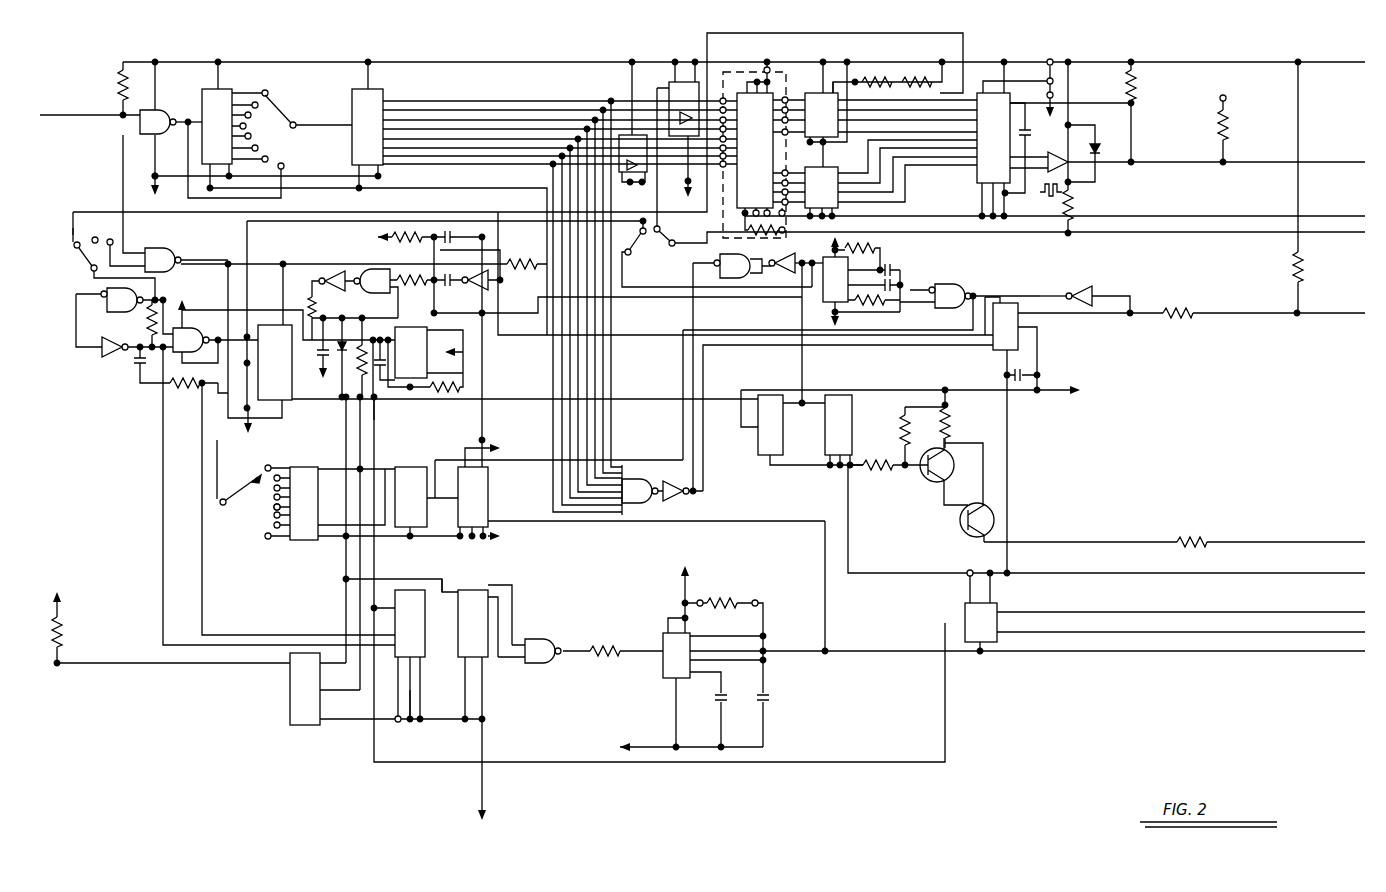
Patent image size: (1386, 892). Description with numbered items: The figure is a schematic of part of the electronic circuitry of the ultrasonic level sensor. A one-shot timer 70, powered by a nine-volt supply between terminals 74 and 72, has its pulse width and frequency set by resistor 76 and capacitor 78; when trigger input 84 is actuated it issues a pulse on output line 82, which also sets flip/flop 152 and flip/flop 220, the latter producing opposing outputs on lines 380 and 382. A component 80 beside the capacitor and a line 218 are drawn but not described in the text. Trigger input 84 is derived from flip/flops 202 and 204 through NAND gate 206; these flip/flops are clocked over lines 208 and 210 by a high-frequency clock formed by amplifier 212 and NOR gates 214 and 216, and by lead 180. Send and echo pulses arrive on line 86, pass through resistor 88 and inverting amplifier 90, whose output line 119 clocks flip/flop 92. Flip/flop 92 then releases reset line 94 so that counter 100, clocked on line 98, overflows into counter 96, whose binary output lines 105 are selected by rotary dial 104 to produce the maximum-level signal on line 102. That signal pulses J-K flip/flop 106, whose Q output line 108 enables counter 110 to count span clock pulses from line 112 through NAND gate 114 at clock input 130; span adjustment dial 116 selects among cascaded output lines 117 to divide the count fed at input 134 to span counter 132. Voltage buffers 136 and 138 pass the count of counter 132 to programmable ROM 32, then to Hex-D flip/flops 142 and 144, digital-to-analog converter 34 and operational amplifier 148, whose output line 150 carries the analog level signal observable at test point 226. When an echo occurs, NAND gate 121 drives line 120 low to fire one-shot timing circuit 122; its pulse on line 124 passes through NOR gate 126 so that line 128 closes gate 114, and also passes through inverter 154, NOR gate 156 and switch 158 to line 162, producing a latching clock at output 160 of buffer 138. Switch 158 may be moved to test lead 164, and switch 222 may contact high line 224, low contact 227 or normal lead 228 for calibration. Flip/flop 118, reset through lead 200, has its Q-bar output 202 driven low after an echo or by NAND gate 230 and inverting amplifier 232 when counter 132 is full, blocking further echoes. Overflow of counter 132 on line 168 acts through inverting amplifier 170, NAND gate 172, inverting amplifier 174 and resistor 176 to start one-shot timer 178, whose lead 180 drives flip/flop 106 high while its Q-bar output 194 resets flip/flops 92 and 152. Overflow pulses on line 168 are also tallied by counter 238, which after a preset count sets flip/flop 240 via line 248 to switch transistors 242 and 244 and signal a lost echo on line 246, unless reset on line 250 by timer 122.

The programmable ROM 32 is at (754, 148).
The digital to analog converter 34 is at (993, 140).
The one-shot timer 70 is at (713, 682).
The power supply terminal 72 is at (662, 747).
The power supply terminal 74 is at (60, 618).
The one megohm resistor 76 is at (742, 597).
The capacitor 78 is at (770, 702).
The capacitor 80 is at (728, 704).
The output line 82 is at (793, 649).
The trigger input 84 is at (619, 650).
The line 86 is at (1318, 313).
The resistor 88 is at (1185, 313).
The inverting amplifier 90 is at (1098, 296).
The flip/flop 92 is at (539, 428).
The reset line 94 is at (325, 462).
The counter 96 is at (382, 503).
The line 98 is at (210, 670).
The counter 100 is at (325, 689).
The line 102 is at (248, 431).
The rotary dial wiper switch 104 is at (231, 487).
The binary ascending output lines 105 is at (254, 531).
The J-K flip/flop 106 is at (275, 362).
The Q output line 108 is at (226, 239).
The counter 110 is at (235, 125).
The line 112 is at (114, 112).
The NAND gate 114 is at (158, 128).
The span adjustment rotary dial 116 is at (270, 103).
The cascaded binary output lines 117 is at (272, 137).
The flip/flop 118 is at (1012, 346).
The output line 119 is at (1050, 296).
The output line 120 is at (929, 290).
The NAND gate 121 is at (953, 288).
The timing circuit 122 is at (863, 281).
The output line 124 is at (812, 290).
The NOR gate 126 is at (186, 260).
The output line 128 is at (116, 164).
The clock pulse input 130 is at (197, 118).
The span counter 132 is at (368, 125).
The input 134 is at (302, 122).
The voltage buffer 136 is at (634, 123).
The voltage buffer 138 is at (684, 129).
The Hex-D flip/flop 142 is at (882, 102).
The Hex-D flip/flop 144 is at (882, 179).
The operational amplifier 148 is at (1057, 153).
The output line 150 is at (1316, 162).
The flip/flop 152 is at (641, 547).
The inverter 154 is at (786, 256).
The NOR gate 156 is at (732, 266).
The switch 158 is at (680, 242).
The output 160 is at (785, 85).
The line 162 is at (652, 202).
The test position lead 164 is at (639, 251).
The line 168 is at (428, 92).
The inverting amplifier circuit 170 is at (493, 285).
The NAND gate 172 is at (373, 281).
The inverting amplifier 174 is at (325, 280).
The resistor 176 is at (318, 310).
The one-shot timer 178 is at (416, 363).
The lead 180 is at (312, 399).
The Q-bar output 194 is at (532, 314).
The reset lead 200 is at (991, 300).
The flip/flop 202 is at (413, 600).
The flip/flop 204 is at (477, 595).
The NAND gate 206 is at (529, 641).
The line 208 is at (250, 635).
The line 210 is at (442, 674).
The amplifier 212 is at (108, 350).
The NOR gate 214 is at (121, 317).
The NOR gate 216 is at (196, 346).
The line 218 is at (379, 420).
The flip/flop 220 is at (955, 613).
The switch 222 is at (83, 262).
The high position line 224 is at (89, 218).
The test point 226 is at (1226, 99).
The low position contact 227 is at (74, 229).
The normal position lead 228 is at (114, 248).
The NAND gate 230 is at (640, 503).
The inverting amplifier 232 is at (691, 496).
The counter 238 is at (758, 440).
The flip/flop 240 is at (905, 412).
The transistor 242 is at (908, 479).
The transistor 244 is at (958, 533).
The line 246 is at (1280, 542).
The line 248 is at (802, 426).
The reset line 250 is at (803, 370).
The line 380 is at (1112, 636).
The line 382 is at (1114, 612).